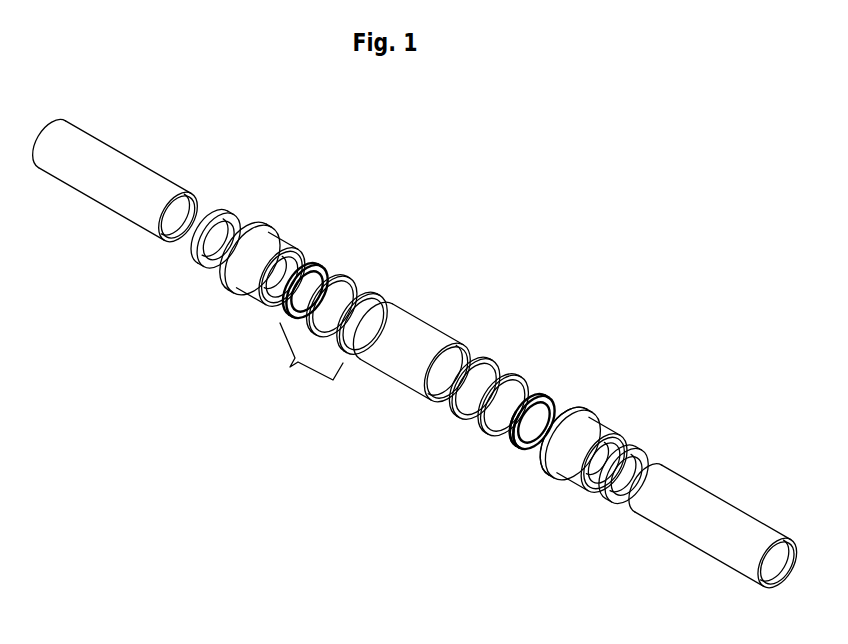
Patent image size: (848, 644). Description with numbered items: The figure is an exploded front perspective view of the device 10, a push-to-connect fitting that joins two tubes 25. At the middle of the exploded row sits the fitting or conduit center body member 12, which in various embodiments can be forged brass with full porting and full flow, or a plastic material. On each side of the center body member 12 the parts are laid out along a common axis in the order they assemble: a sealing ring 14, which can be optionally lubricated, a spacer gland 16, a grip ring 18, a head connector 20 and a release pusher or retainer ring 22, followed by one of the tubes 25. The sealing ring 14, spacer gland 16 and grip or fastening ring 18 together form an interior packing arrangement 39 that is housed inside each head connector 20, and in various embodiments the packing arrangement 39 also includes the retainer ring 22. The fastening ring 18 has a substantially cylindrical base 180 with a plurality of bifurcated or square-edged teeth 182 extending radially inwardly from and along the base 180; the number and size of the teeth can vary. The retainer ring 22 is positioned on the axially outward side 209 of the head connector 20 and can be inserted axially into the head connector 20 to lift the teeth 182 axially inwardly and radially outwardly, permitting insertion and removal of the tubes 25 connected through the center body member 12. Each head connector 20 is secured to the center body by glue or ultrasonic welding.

The device 10 is at (667, 270).
The center body member 12 is at (413, 317).
The sealing ring 14 is at (373, 300).
The spacer gland 16 is at (335, 282).
The grip ring 18 is at (307, 268).
The head connector 20 is at (270, 225).
The retainer ring 22 is at (217, 210).
The tube 25 is at (112, 158).
The interior packing arrangement 39 is at (303, 361).
The cylindrical base 180 is at (503, 443).
The teeth 182 is at (517, 452).
The axially outward side 209 is at (623, 413).